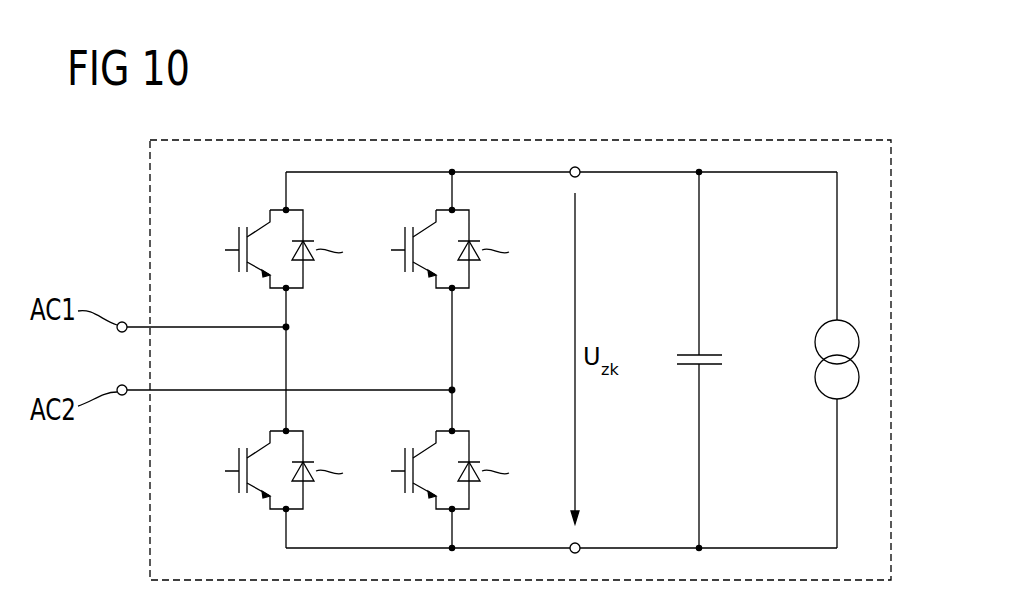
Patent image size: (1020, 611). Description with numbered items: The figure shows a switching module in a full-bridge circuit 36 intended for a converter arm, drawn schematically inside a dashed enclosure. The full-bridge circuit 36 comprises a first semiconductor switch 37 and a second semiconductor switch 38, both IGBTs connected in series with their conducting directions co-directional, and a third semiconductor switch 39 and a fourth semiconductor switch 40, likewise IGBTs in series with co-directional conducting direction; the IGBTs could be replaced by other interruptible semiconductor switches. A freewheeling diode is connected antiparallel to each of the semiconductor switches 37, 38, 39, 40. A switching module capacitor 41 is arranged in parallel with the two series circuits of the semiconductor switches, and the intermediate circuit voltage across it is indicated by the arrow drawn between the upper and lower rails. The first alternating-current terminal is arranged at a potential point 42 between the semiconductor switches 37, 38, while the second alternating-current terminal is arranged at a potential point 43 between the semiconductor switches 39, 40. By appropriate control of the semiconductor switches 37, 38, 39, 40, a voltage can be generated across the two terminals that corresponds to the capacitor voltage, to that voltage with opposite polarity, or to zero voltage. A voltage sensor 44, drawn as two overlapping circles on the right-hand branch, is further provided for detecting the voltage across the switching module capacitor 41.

The full-bridge circuit 36 is at (764, 139).
The first semiconductor switch 37 is at (239, 231).
The second semiconductor switch 38 is at (239, 488).
The third semiconductor switch 39 is at (405, 231).
The fourth semiconductor switch 40 is at (405, 488).
The switching module capacitor 41 is at (722, 360).
The potential point 42 is at (288, 329).
The potential point 43 is at (454, 392).
The voltage sensor 44 is at (815, 328).